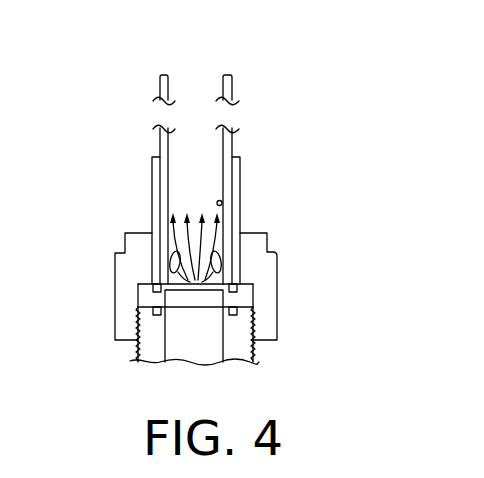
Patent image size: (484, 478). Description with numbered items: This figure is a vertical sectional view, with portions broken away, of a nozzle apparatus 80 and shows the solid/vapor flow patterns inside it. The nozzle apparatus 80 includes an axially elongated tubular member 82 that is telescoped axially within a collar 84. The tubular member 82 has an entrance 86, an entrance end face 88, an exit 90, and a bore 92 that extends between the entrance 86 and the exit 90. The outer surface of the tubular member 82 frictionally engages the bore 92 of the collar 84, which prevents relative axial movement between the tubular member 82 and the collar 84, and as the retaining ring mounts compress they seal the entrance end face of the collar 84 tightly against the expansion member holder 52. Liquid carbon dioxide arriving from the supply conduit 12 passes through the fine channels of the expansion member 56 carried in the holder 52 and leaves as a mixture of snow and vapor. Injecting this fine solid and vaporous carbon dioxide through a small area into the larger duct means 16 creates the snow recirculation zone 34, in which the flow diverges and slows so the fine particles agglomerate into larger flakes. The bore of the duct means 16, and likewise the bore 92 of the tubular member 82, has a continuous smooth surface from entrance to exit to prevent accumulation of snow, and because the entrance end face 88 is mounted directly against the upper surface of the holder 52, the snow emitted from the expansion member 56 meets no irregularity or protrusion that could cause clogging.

The supply conduit 12 is at (266, 355).
The duct means 16 is at (232, 220).
The recirculation zone 34 is at (217, 266).
The expansion member holder 52 is at (138, 308).
The expansion member 56 is at (218, 298).
The nozzle apparatus 80 is at (137, 220).
The tubular member 82 is at (233, 141).
The collar 84 is at (152, 187).
The entrance 86 is at (172, 265).
The entrance end face 88 is at (157, 278).
The exit 90 is at (228, 74).
The bore 92 is at (221, 201).